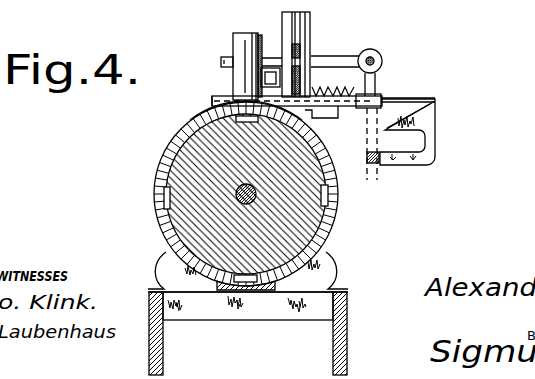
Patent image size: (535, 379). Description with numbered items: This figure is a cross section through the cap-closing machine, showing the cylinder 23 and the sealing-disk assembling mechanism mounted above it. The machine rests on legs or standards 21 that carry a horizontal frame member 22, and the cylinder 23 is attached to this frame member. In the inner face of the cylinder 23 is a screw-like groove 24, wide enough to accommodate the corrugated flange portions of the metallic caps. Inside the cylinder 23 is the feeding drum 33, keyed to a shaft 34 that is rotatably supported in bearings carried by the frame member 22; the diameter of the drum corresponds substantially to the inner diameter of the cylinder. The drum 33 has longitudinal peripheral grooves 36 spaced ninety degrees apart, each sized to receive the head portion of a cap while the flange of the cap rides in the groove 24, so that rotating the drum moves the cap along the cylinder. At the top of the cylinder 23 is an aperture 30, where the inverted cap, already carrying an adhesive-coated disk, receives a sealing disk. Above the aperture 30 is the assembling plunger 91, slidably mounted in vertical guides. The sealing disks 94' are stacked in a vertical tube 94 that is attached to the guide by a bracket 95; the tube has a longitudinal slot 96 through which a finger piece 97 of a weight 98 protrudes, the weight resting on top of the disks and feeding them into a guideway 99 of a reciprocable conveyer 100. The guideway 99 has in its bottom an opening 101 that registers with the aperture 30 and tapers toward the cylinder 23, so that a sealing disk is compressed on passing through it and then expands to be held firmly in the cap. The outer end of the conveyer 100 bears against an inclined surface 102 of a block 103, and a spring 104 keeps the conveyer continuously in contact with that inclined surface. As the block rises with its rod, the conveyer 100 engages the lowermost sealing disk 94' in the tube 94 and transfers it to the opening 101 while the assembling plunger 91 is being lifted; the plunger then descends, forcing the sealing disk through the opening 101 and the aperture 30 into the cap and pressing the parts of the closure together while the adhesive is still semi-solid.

The legs or standards 21 is at (149, 340).
The horizontal frame member 22 is at (212, 309).
The cylinder 23 is at (165, 157).
The screw-like groove 24 is at (166, 214).
The aperture 30 is at (205, 112).
The feeding drum 33 is at (318, 229).
The shaft 34 is at (242, 198).
The longitudinal peripheral grooves 36 is at (327, 196).
The assembling plunger 91 is at (236, 42).
The vertical tube 94 is at (280, 52).
The sealing disks 94' is at (328, 84).
The bracket 95 is at (270, 68).
The longitudinal slot 96 is at (305, 18).
The finger piece 97 is at (348, 56).
The weight 98 is at (298, 48).
The guideway 99 is at (347, 107).
The reciprocable conveyer 100 is at (403, 97).
The opening 101 is at (232, 100).
The inclined surface 102 is at (428, 117).
The block 103 is at (428, 126).
The spring 104 is at (376, 80).